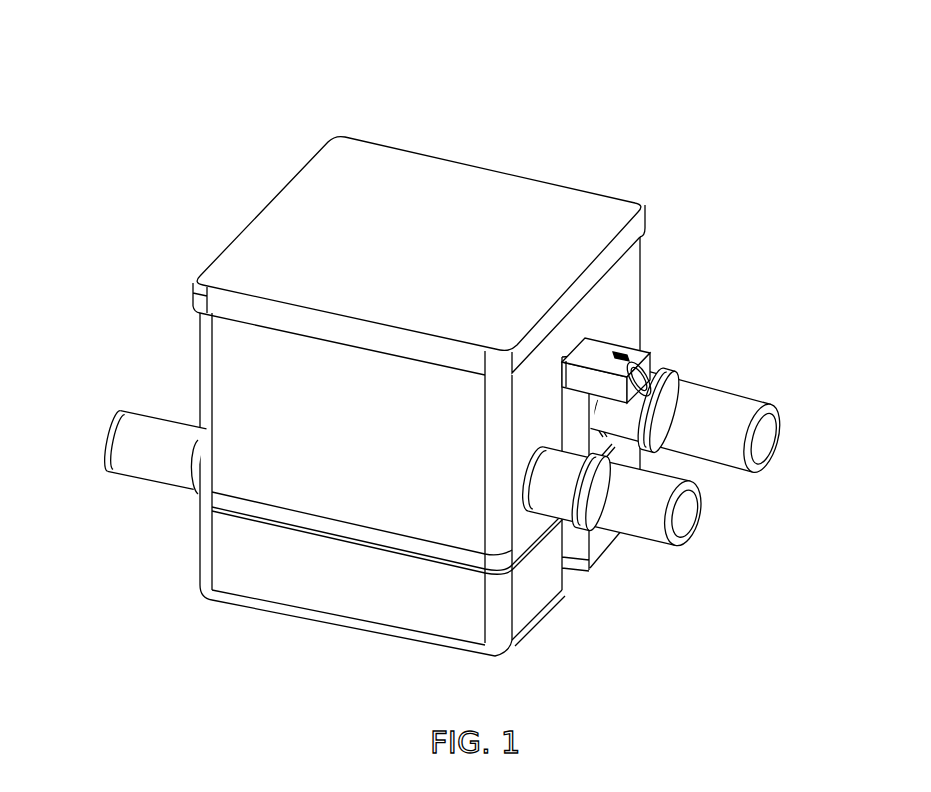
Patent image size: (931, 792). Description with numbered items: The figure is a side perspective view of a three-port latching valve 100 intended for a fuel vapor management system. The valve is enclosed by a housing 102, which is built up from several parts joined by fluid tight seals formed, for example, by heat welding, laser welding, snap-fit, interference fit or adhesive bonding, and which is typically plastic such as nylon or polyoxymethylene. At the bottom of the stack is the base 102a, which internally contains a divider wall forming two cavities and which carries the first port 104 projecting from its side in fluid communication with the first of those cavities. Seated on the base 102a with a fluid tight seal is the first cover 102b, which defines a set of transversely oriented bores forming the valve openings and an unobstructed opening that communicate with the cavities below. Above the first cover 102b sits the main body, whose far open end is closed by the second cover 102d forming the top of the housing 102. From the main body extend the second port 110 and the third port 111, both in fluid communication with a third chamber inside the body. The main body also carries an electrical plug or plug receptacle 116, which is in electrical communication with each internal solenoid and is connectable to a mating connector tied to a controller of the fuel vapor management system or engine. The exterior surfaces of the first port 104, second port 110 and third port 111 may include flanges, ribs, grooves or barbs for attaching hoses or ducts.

The three-port latching valve 100 is at (511, 96).
The housing 102 is at (225, 382).
The base 102a is at (228, 558).
The first cover 102b is at (222, 503).
The second cover 102d is at (278, 200).
The first port 104 is at (108, 438).
The second port 110 is at (768, 440).
The third port 111 is at (697, 518).
The electrical plug or plug receptacle 116 is at (648, 362).